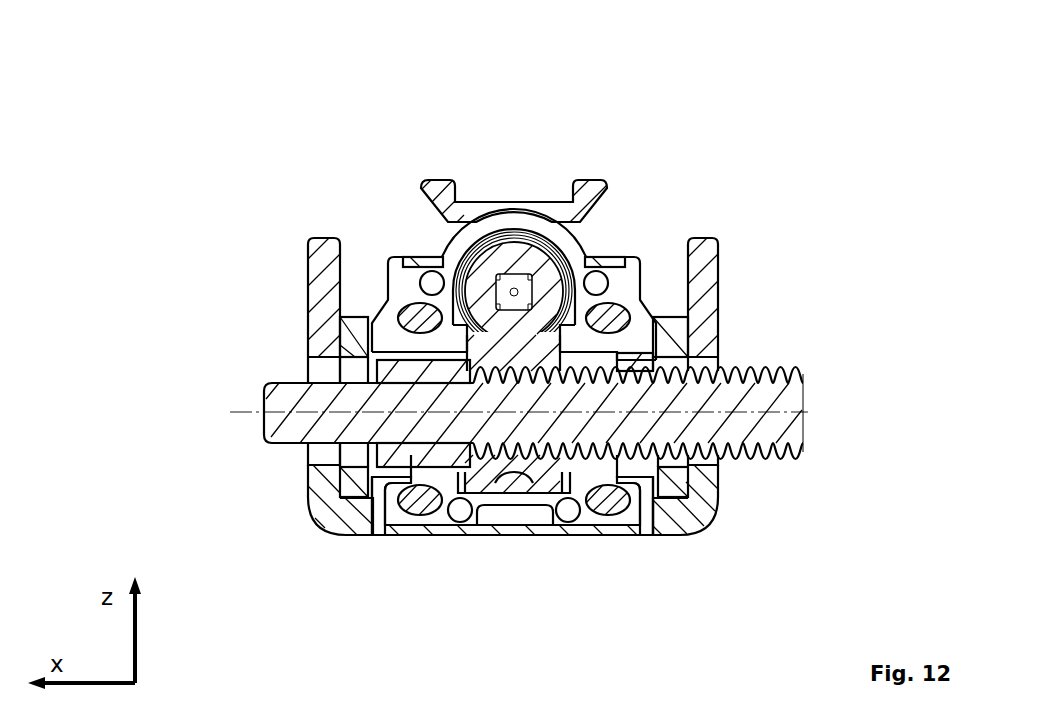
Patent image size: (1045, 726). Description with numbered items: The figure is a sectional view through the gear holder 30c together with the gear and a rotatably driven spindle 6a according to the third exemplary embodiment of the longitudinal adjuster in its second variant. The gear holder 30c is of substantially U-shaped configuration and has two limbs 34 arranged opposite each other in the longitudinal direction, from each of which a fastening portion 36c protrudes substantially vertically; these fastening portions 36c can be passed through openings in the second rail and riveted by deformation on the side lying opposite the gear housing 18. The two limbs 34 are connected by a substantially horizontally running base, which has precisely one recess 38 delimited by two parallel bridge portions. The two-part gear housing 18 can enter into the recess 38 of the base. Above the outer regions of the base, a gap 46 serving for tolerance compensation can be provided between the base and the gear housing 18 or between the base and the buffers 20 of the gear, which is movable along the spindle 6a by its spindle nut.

The spindle 6a is at (295, 437).
The gear housing 18 is at (545, 230).
The buffers 20 is at (417, 262).
The gear holder 30c is at (411, 145).
The limbs 34 is at (316, 328).
The fastening portions 36c is at (320, 262).
The recess 38 is at (373, 536).
The gap 46 is at (358, 498).